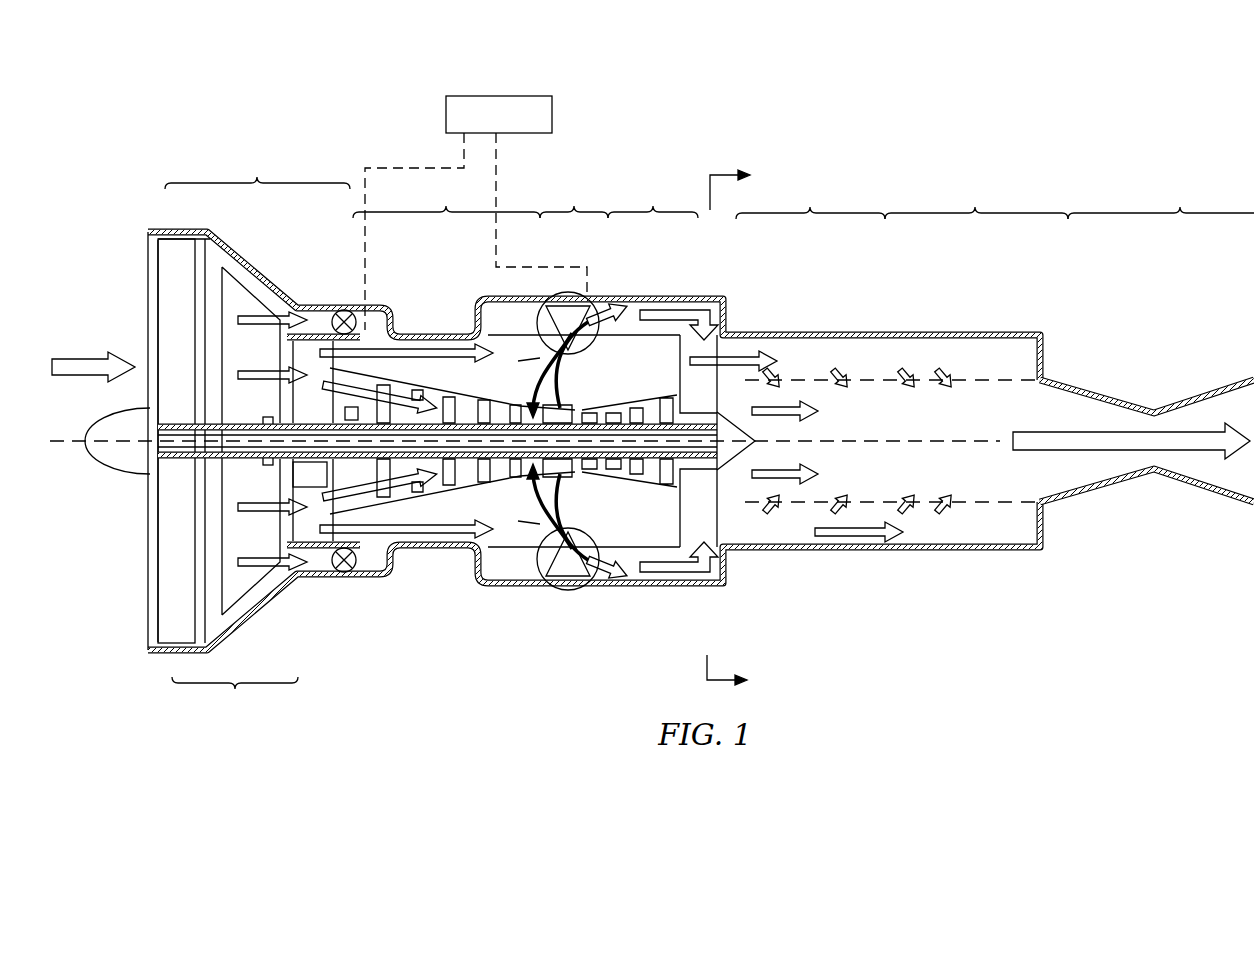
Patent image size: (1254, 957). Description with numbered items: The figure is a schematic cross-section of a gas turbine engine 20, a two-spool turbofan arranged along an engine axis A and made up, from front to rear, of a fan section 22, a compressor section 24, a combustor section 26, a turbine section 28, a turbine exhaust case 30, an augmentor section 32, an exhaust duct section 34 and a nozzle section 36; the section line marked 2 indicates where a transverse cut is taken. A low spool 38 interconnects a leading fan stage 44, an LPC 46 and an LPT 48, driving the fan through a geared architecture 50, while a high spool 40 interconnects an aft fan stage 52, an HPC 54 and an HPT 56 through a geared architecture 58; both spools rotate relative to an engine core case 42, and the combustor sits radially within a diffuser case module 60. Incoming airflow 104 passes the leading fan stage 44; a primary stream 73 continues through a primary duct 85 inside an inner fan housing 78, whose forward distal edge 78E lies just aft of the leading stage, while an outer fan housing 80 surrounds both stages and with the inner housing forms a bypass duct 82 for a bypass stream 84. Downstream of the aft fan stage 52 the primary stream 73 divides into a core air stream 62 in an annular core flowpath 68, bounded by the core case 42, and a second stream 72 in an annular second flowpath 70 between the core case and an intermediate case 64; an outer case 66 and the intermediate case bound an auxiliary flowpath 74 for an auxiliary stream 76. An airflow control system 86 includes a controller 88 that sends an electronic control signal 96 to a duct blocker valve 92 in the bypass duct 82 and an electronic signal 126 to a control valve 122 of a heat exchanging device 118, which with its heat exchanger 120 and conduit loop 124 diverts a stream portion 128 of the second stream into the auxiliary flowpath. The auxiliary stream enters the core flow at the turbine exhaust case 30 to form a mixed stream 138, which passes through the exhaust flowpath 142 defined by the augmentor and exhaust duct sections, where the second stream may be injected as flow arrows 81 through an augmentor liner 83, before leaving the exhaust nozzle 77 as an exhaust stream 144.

The gas turbine engine 20 is at (1107, 156).
The fan section 22 is at (257, 168).
The compressor section 24 is at (446, 199).
The combustor section 26 is at (574, 199).
The turbine section 28 is at (653, 199).
The turbine exhaust case 30 is at (735, 560).
The augmentor section 32 is at (810, 199).
The exhaust duct section 34 is at (976, 199).
The nozzle section 36 is at (1161, 199).
The low spool 38 is at (705, 475).
The high spool 40 is at (445, 546).
The engine core case 42 is at (405, 383).
The leading fan stage 44 is at (235, 698).
The LPC 46 is at (434, 551).
The LPT 48 is at (662, 395).
The geared architecture 50 is at (270, 459).
The aft fan stage 52 is at (290, 488).
The HPC 54 is at (515, 550).
The HPT 56 is at (598, 405).
The geared architecture 58 is at (300, 410).
The diffuser case module 60 is at (585, 485).
The core air stream 62 is at (320, 520).
The intermediate case 64 is at (432, 333).
The outer case 66 is at (690, 298).
The annular core flowpath 68 is at (472, 410).
The annular second flowpath 70 is at (746, 441).
The second stream 72 is at (458, 574).
The primary stream 73 is at (240, 376).
The auxiliary flowpath 74 is at (635, 590).
The auxiliary stream 76 is at (705, 300).
The exhaust nozzle 77 is at (1200, 383).
The inner fan housing 78 is at (318, 333).
The forward distal edge 78E is at (262, 320).
The outer fan housing 80 is at (238, 264).
The flow arrows 81 is at (908, 388).
The bypass duct 82 is at (320, 572).
The augmentor liner 83 is at (1000, 387).
The bypass stream 84 is at (258, 575).
The primary duct 85 is at (325, 447).
The airflow control system 86 is at (556, 101).
The controller 88 is at (499, 114).
The duct blocker valve 92 is at (358, 572).
The electronic control signal 96 is at (393, 168).
The incoming airflow 104 is at (80, 360).
The heat exchanging device 118 is at (600, 306).
The heat exchanger 120 is at (537, 588).
The control valve 122 is at (578, 592).
The conduit loop 124 is at (592, 512).
The electronic signal 126 is at (502, 182).
The stream portion 128 is at (547, 354).
The mixed stream 138 is at (800, 412).
The exhaust flowpath 142 is at (1094, 454).
The exhaust stream 144 is at (1095, 455).
The section line 2 is at (739, 427).
The engine axis A is at (75, 453).